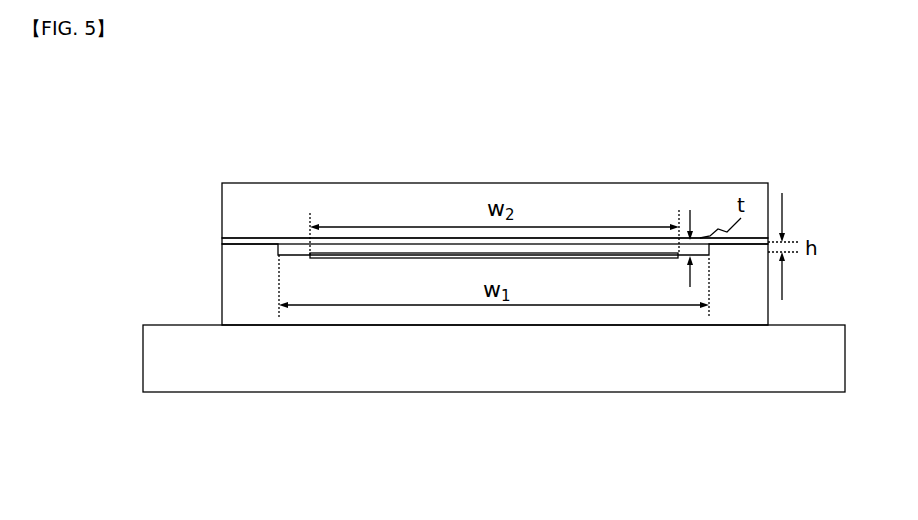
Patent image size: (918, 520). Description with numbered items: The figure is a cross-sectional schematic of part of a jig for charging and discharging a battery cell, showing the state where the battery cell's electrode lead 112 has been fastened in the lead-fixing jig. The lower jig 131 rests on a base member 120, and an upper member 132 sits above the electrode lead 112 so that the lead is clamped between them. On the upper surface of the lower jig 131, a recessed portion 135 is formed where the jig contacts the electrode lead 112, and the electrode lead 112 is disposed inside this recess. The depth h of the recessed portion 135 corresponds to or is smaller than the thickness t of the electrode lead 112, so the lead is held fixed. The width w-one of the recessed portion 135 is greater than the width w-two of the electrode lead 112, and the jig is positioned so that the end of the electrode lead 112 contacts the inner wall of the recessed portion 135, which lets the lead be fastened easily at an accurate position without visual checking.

The upper body / cover layer 132 is at (525, 183).
The electrode lead 112 is at (305, 247).
The lower jig 131 is at (222, 278).
The recessed portion 135 is at (279, 248).
The base substrate 120 is at (467, 392).